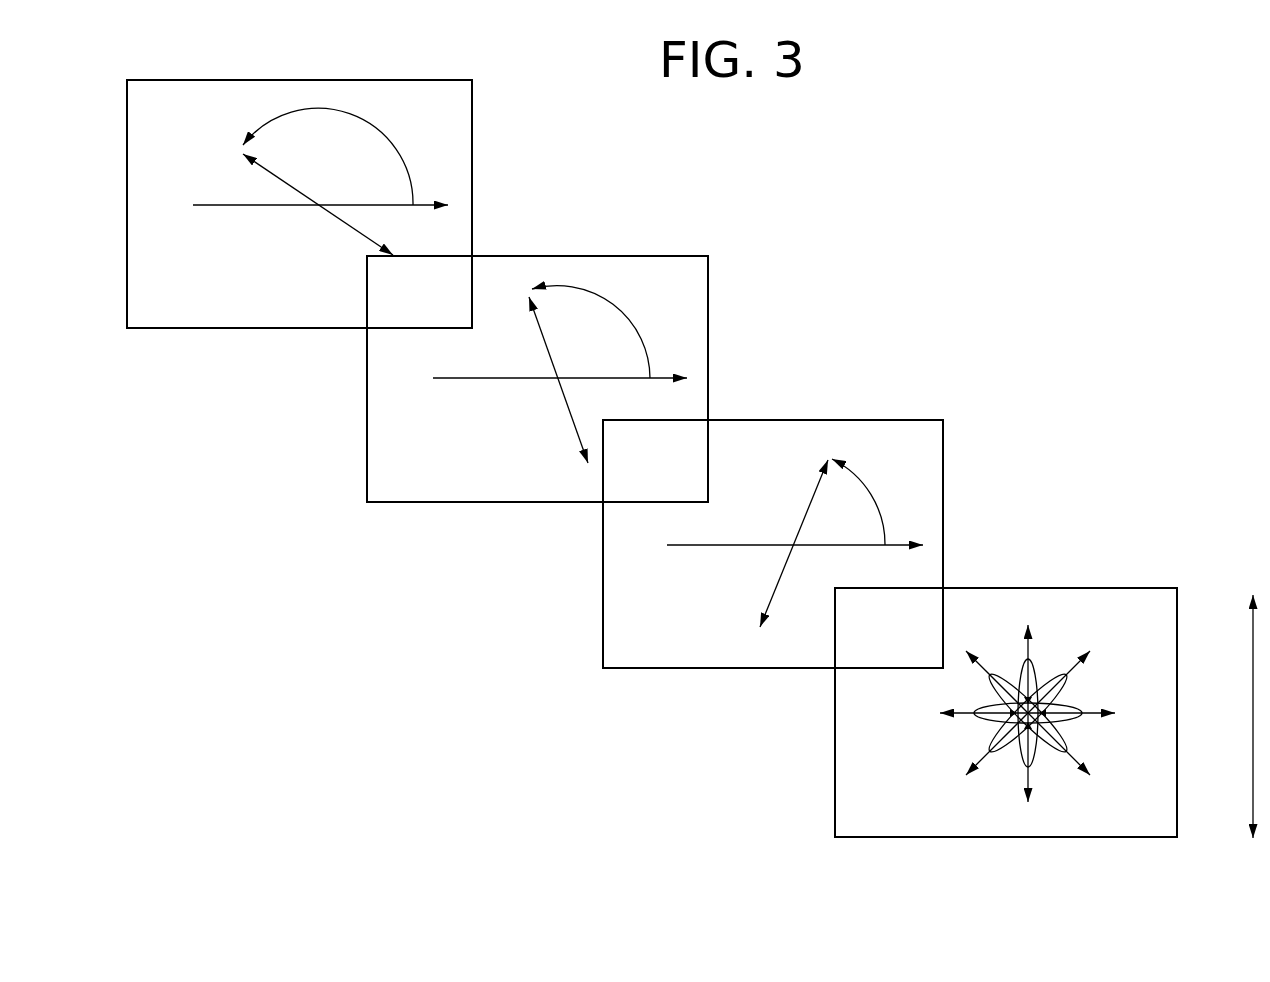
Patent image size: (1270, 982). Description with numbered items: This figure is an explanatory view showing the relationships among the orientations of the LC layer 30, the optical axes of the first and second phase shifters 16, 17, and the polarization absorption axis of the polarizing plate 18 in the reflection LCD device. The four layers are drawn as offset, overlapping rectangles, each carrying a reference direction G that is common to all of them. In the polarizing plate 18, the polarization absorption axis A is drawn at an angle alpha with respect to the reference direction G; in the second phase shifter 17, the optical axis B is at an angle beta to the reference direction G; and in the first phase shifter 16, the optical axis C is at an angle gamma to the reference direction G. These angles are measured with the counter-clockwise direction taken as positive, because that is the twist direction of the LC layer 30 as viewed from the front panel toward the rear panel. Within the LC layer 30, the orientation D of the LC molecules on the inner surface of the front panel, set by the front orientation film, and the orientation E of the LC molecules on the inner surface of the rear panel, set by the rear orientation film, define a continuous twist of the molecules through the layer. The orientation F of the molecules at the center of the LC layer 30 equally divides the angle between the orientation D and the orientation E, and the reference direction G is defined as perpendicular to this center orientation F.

The polarizing plate 18 is at (473, 120).
The second phase shifter 17 is at (710, 295).
The first phase shifter 16 is at (945, 458).
The LC layer 30 is at (1158, 588).
The polarization absorption axis A is at (333, 217).
The optical axis of the second phase shifter B is at (565, 402).
The optical axis of the first phase shifter C is at (777, 578).
The orientation of the LC molecules on the front panel D is at (980, 755).
The orientation of the LC molecules on the rear panel E is at (1075, 758).
The orientation of the LC molecules at the center of the LC layer F is at (1030, 782).
The reference direction G is at (1097, 713).